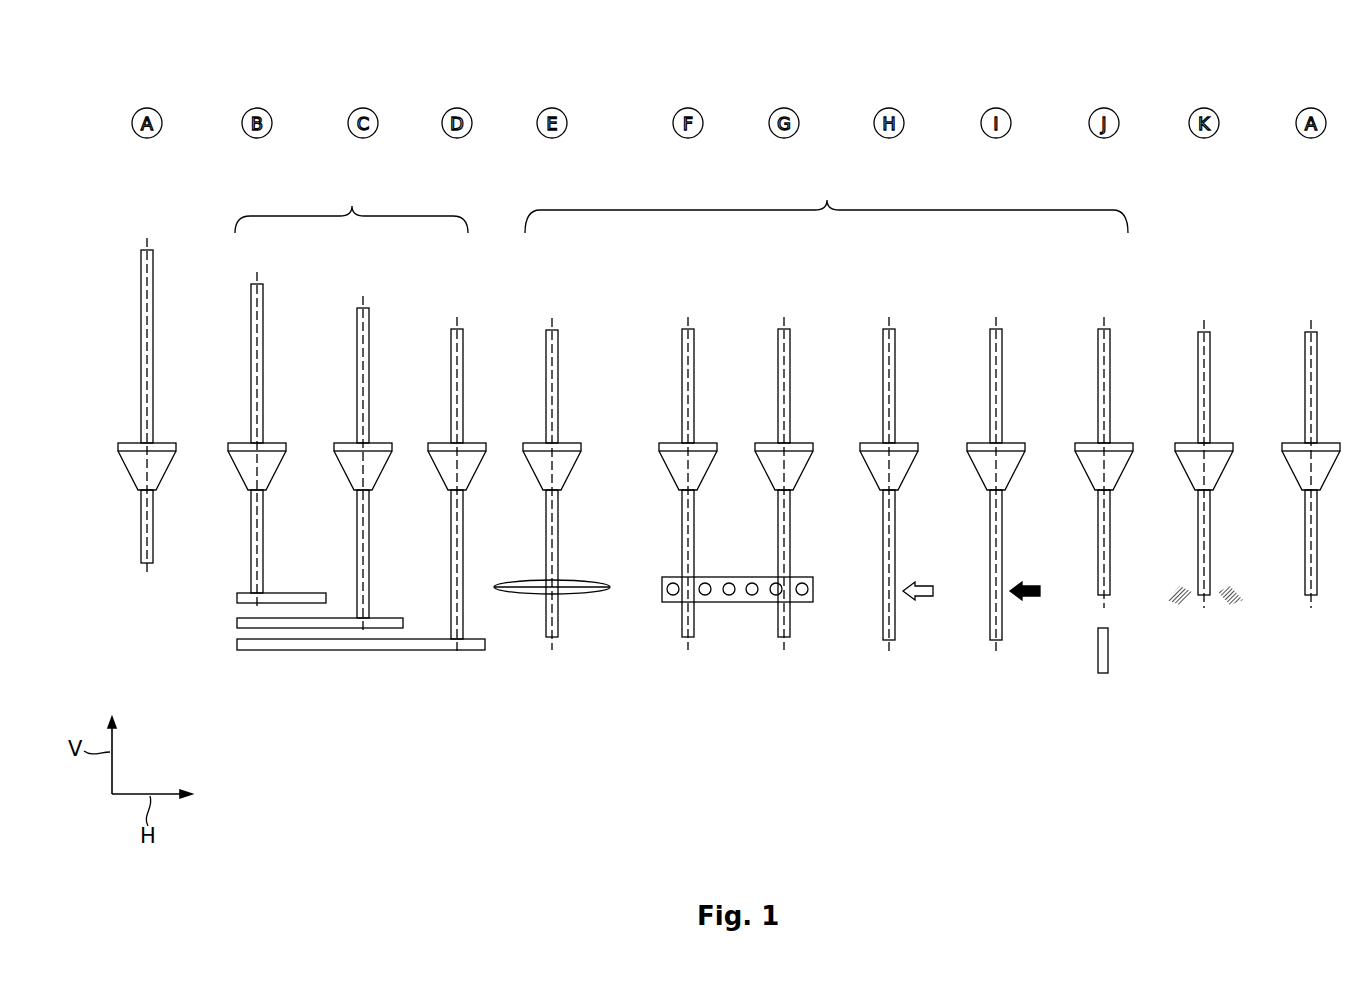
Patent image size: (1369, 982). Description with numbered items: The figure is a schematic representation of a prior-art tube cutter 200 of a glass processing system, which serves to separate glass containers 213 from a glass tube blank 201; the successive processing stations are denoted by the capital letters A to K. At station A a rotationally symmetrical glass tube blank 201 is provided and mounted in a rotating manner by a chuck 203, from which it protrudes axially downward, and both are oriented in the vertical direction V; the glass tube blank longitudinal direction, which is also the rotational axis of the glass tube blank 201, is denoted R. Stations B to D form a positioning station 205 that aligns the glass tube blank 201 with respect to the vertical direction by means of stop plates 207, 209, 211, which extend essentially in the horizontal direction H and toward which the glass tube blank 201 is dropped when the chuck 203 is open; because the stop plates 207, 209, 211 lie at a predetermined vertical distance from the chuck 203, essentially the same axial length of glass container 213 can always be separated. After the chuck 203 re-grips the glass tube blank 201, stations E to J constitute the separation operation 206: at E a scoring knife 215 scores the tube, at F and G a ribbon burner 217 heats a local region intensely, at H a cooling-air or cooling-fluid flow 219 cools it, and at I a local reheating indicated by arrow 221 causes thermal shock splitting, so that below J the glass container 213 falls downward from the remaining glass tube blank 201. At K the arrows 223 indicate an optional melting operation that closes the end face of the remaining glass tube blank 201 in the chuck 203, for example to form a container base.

The tube cutter 200 is at (1056, 97).
The glass tube blank 201 is at (153, 287).
The chuck 203 is at (128, 470).
The positioning station 205 is at (351, 206).
The separation operation 206 is at (826, 206).
The stop plate 207 is at (237, 598).
The stop plate 209 is at (237, 623).
The stop plate 211 is at (237, 645).
The glass container 213 is at (1110, 650).
The scoring knife 215 is at (585, 594).
The ribbon burner 217 is at (734, 604).
The cooling-air flow or cooling-fluid flow 219 is at (926, 602).
The arrow indicating local reheating 221 is at (1030, 600).
The arrows indicating melting operation 223 is at (1236, 605).
The glass tube blank longitudinal direction R is at (138, 578).